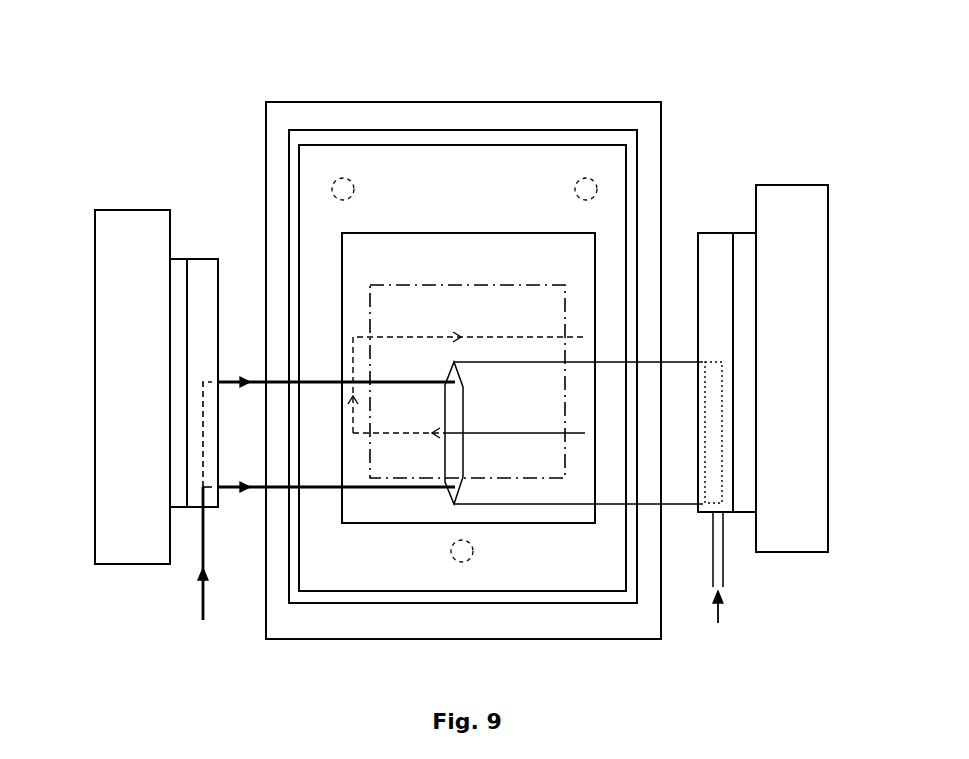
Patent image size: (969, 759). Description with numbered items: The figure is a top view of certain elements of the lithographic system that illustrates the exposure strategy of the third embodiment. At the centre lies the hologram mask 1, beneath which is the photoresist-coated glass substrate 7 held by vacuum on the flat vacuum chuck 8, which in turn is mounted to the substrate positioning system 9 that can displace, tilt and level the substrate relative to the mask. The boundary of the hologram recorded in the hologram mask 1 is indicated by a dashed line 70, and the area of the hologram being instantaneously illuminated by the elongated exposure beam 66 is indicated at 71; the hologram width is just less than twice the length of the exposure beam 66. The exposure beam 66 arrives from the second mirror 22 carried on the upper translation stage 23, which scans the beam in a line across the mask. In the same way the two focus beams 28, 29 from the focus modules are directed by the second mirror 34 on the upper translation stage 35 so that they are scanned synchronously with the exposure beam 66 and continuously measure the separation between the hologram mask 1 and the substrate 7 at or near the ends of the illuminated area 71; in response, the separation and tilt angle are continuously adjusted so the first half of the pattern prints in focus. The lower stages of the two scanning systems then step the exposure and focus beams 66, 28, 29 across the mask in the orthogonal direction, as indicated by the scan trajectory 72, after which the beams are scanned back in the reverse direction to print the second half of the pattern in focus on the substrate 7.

The hologram mask 1 is at (527, 523).
The glass substrate 7 is at (445, 155).
The vacuum chuck 8 is at (553, 130).
The substrate positioning system 9 is at (637, 98).
The second mirror 22 is at (712, 238).
The upper translation stage 23 is at (820, 381).
The focus beam 28 is at (255, 490).
The focus beam 29 is at (244, 375).
The second mirror 34 is at (205, 265).
The upper translation stage 35 is at (95, 374).
The exposure beam 66 is at (730, 620).
The dashed line 70 is at (553, 478).
The area of the hologram being instantaneously illuminated 71 is at (447, 463).
The scan trajectory 72 is at (358, 433).